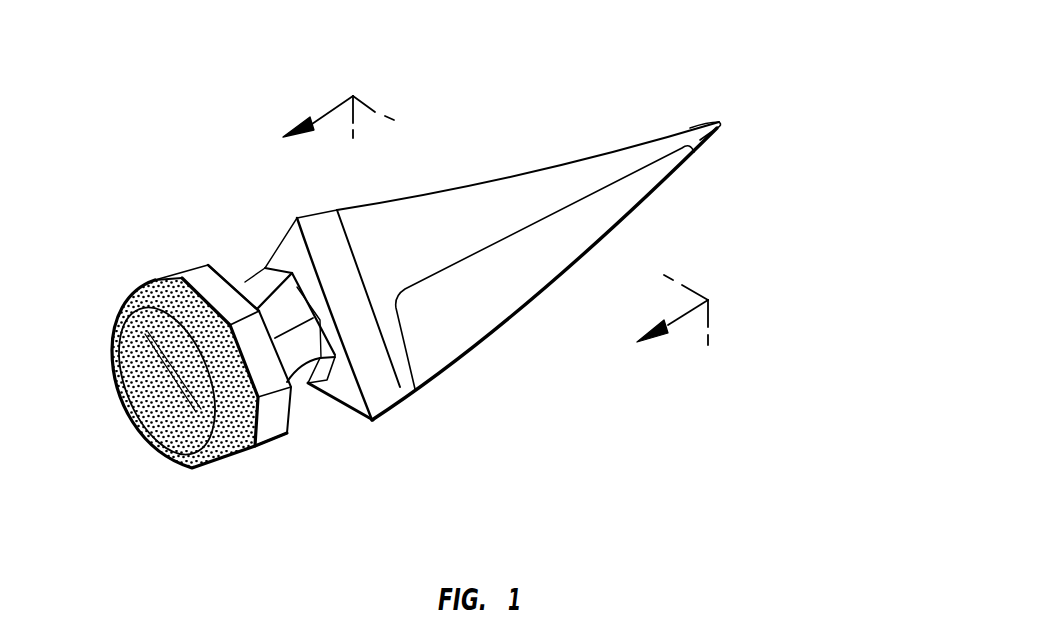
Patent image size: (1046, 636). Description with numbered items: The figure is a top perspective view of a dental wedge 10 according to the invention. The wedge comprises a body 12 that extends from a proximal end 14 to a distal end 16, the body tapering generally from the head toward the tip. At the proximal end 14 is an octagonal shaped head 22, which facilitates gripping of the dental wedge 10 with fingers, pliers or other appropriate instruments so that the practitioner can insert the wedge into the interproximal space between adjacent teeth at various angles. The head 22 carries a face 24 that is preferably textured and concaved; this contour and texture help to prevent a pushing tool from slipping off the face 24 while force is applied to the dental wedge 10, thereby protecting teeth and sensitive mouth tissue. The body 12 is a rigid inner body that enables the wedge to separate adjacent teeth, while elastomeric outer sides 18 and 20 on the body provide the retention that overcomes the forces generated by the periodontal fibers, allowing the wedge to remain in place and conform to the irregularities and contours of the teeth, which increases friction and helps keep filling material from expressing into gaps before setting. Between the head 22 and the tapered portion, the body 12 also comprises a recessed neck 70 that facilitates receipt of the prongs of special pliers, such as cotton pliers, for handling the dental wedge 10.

The dental wedge 10 is at (496, 70).
The body 12 is at (425, 203).
The proximal end 14 is at (89, 320).
The distal end 16 is at (716, 97).
The elastomeric outer side 18 is at (553, 167).
The elastomeric outer side 20 is at (488, 293).
The head 22 is at (176, 271).
The face 24 is at (128, 424).
The recessed neck 70 is at (243, 280).